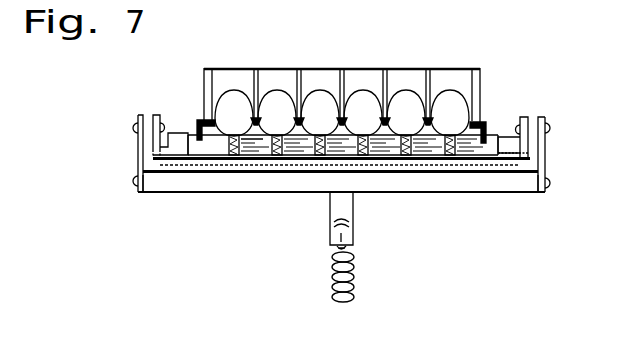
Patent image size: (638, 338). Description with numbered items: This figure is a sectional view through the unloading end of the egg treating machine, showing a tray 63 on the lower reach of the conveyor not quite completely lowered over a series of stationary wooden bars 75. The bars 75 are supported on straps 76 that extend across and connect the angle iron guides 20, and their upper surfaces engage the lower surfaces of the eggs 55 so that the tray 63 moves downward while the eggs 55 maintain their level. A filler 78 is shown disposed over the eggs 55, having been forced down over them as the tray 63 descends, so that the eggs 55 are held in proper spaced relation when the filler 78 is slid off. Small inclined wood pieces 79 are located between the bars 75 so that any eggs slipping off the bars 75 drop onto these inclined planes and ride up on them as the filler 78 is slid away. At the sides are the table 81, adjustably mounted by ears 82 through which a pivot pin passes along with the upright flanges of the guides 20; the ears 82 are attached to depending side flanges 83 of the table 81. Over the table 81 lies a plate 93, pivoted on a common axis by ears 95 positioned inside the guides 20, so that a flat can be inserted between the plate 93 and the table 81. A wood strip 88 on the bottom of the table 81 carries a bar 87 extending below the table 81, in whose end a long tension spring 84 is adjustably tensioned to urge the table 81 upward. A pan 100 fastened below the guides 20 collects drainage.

The angle iron guides 20 is at (157, 112).
The ears 95 is at (167, 115).
The plate 93 is at (181, 135).
The ears 82 is at (137, 157).
The depending side flanges 83 is at (148, 193).
The wood strip 88 is at (237, 184).
The inclined wood pieces 79 is at (293, 147).
The bar 87 is at (357, 212).
The tension spring 84 is at (357, 278).
The stationary wooden bars 75 is at (380, 150).
The straps 76 is at (468, 158).
The pan 100 is at (487, 167).
The table 81 is at (533, 170).
The tray 63 is at (487, 122).
The filler 78 is at (348, 70).
The eggs 55 is at (372, 100).